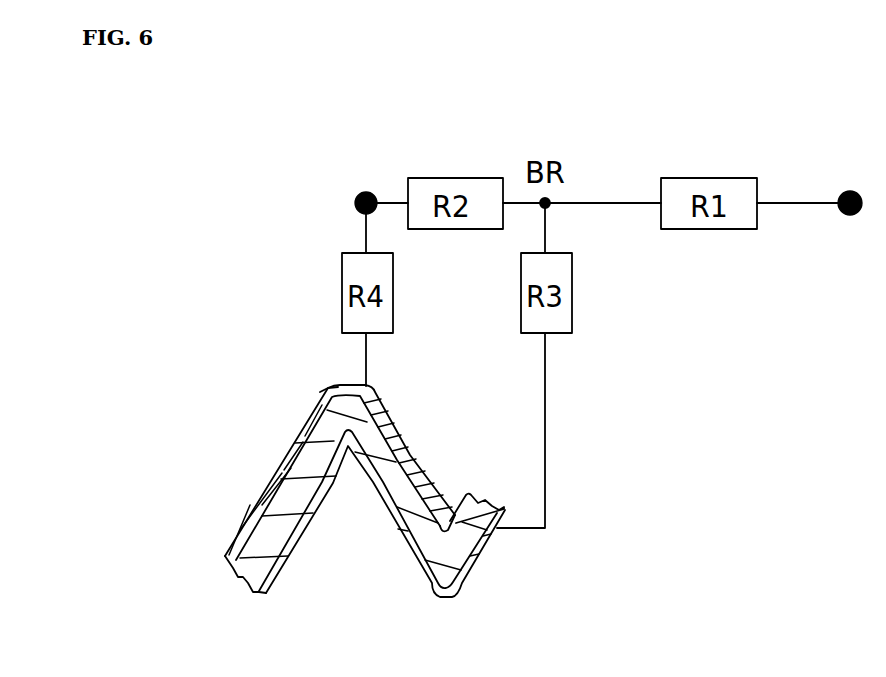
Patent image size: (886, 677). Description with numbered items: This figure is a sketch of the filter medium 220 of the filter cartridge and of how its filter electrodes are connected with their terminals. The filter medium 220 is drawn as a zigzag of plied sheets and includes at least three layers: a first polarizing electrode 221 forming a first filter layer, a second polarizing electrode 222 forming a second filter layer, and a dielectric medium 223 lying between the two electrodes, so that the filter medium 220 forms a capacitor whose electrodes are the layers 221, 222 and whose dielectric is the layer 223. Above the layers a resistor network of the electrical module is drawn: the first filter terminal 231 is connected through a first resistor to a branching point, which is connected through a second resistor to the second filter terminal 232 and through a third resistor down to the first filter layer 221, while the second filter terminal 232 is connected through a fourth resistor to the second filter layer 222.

The filter medium 220 is at (257, 460).
The first polarizing electrode 221 is at (484, 548).
The second polarizing electrode 222 is at (468, 494).
The dielectric medium 223 is at (482, 511).
The first filter terminal 231 is at (852, 183).
The second filter terminal 232 is at (364, 183).